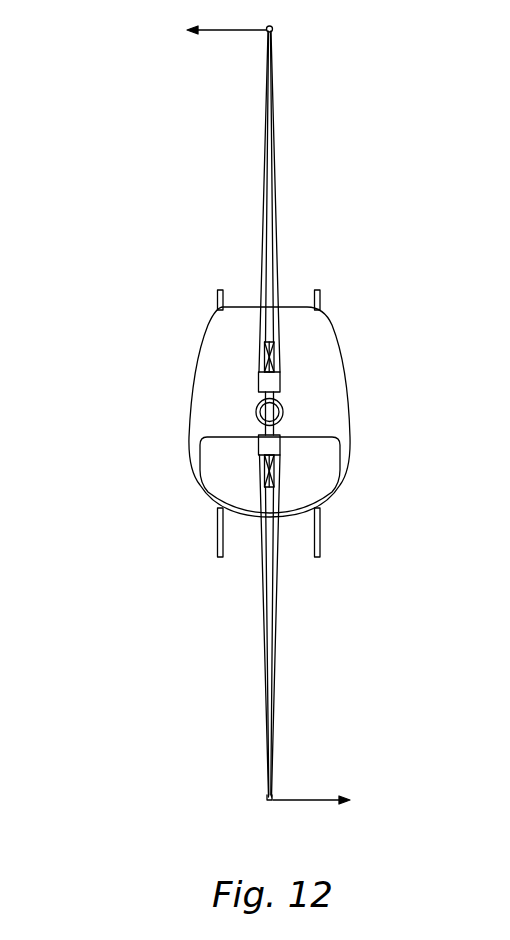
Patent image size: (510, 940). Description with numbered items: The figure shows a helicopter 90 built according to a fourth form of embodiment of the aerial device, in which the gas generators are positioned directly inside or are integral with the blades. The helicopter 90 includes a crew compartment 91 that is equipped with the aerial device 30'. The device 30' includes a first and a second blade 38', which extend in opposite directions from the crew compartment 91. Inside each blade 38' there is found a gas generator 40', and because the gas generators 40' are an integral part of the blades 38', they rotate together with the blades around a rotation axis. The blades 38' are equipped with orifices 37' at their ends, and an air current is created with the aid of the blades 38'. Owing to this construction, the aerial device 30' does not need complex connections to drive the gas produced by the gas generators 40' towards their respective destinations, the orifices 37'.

The helicopter 90 is at (130, 304).
The aerial device 30' is at (323, 398).
The crew compartment 91 is at (316, 390).
The blade 38' is at (265, 414).
The gas generator 40' is at (269, 425).
The orifice 37' is at (266, 436).